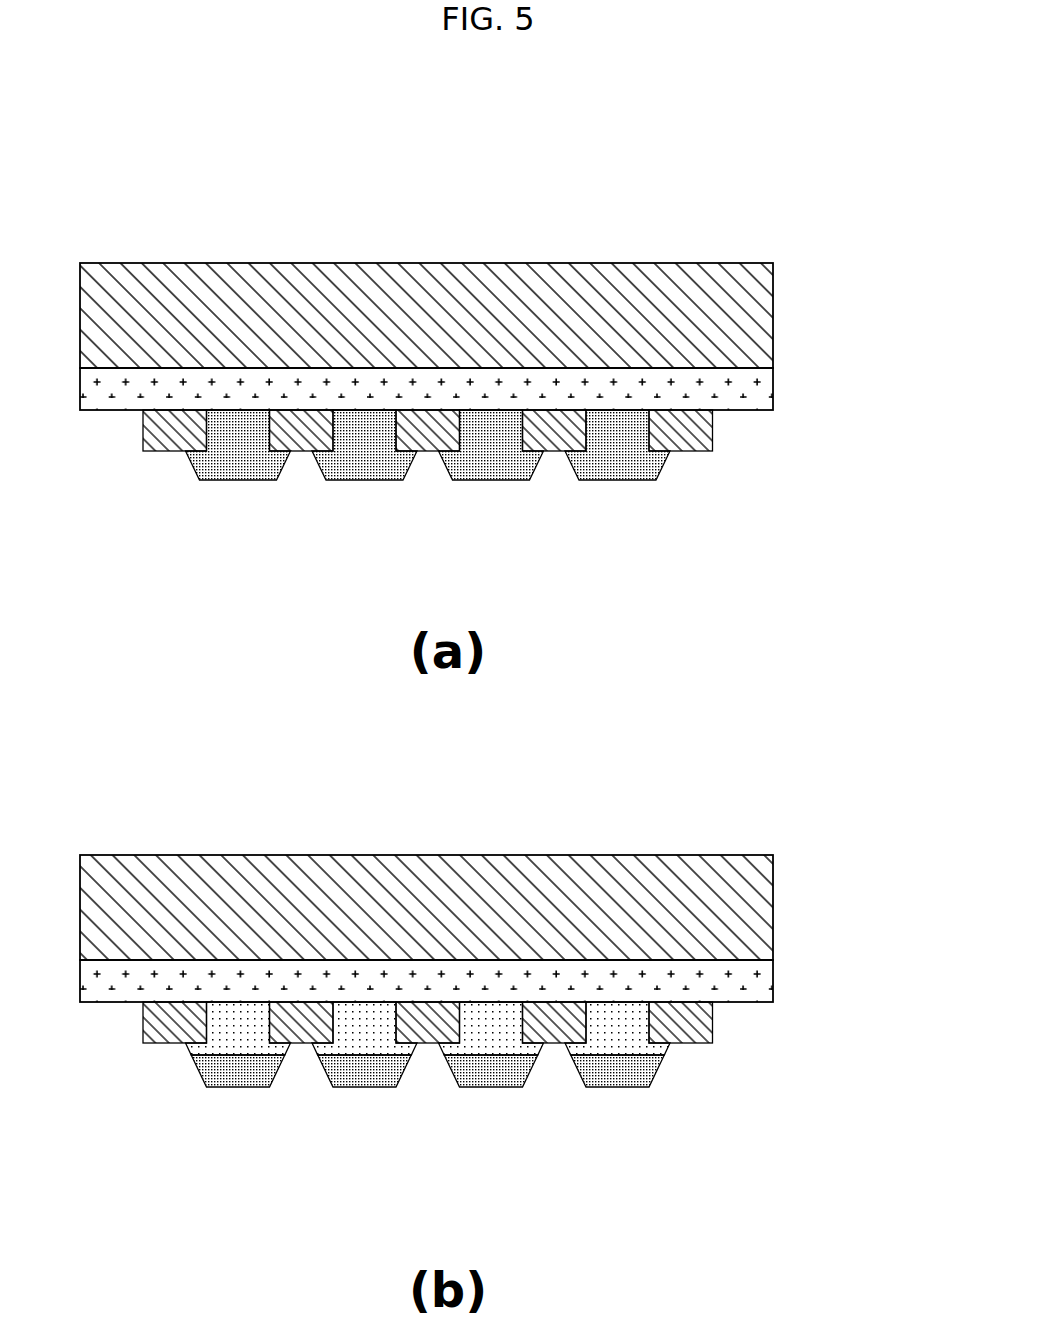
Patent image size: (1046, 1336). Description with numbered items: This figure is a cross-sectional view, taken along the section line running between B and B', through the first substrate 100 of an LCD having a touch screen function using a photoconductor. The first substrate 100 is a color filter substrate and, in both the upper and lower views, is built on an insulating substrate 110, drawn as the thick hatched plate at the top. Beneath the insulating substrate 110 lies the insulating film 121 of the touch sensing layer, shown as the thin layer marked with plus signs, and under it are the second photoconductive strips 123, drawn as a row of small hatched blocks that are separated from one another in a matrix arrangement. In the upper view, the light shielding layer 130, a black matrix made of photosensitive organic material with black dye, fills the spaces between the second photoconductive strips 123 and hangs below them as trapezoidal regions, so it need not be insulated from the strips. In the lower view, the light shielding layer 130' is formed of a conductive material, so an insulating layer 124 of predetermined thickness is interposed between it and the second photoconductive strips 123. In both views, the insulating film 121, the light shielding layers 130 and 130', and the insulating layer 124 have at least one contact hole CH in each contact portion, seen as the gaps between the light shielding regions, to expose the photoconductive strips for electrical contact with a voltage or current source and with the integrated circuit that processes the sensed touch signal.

The first substrate 100 is at (635, 220).
The insulating substrate 110 is at (747, 318).
The insulating film 121 is at (748, 387).
The second photoconductive strip 123 is at (712, 442).
The light shielding layer 130 is at (461, 505).
The insulating layer 124 is at (197, 1050).
The light shielding layer 130' is at (469, 1133).
The contact hole CH is at (428, 467).
The section line B is at (75, 732).
The section line B' is at (777, 733).